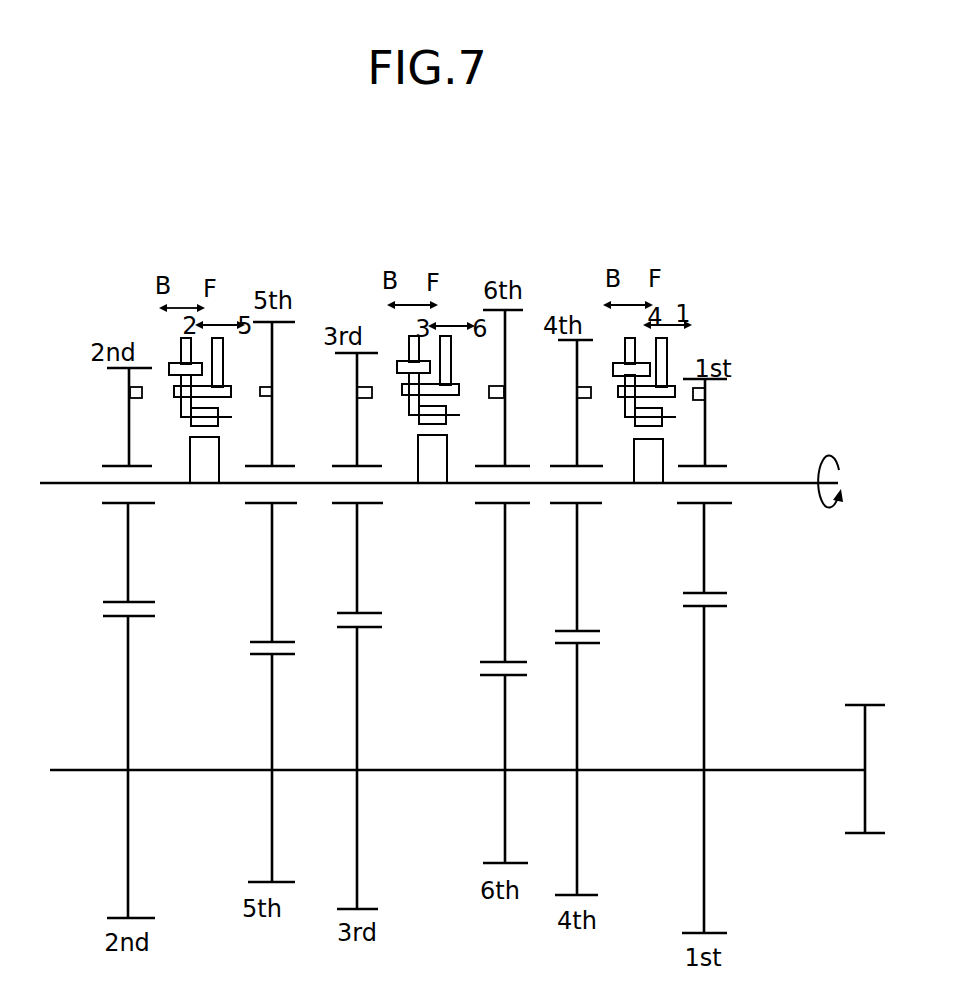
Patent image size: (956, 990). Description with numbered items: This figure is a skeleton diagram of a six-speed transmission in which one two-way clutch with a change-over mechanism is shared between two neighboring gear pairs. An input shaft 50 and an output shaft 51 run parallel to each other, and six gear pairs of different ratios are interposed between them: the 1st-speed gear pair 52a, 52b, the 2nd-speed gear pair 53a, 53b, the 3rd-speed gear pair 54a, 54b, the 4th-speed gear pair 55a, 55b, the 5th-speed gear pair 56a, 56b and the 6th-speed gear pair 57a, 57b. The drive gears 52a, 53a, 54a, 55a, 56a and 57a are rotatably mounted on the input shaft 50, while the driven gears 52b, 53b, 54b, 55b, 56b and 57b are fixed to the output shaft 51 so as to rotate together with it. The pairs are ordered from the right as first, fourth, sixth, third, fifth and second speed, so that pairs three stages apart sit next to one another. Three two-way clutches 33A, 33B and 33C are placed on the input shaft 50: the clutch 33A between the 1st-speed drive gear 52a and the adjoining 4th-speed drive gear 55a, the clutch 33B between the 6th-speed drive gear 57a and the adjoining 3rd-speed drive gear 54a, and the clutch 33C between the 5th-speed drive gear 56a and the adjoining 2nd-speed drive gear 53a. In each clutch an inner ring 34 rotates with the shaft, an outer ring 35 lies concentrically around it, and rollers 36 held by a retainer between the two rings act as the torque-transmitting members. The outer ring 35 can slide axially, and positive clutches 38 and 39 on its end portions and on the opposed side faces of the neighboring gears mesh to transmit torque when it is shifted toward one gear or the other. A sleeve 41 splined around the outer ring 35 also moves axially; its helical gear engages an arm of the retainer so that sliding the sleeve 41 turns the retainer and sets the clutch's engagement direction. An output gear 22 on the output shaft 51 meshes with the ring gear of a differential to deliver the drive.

The two-way clutch 33A is at (682, 251).
The two-way clutch 33B is at (425, 252).
The two-way clutch 33C is at (179, 252).
The sleeve 41 is at (168, 365).
The outer ring 35 is at (173, 390).
The rollers 36 is at (193, 423).
The inner ring 34 is at (202, 468).
The positive clutch 38 is at (270, 390).
The positive clutch 39 is at (132, 400).
The input shaft 50 is at (766, 485).
The output shaft 51 is at (782, 771).
The output gear 22 is at (865, 705).
The 1st-speed drive gear 52a is at (718, 594).
The 1st-speed driven gear 52b is at (705, 660).
The 2nd-speed drive gear 53a is at (578, 617).
The 2nd-speed driven gear 53b is at (578, 720).
The 3rd-speed drive gear 54a is at (503, 635).
The 3rd-speed driven gear 54b is at (503, 712).
The 4th-speed drive gear 55a is at (367, 608).
The 4th-speed driven gear 55b is at (366, 906).
The 5th-speed drive gear 56a is at (260, 637).
The 5th-speed driven gear 56b is at (262, 660).
The 6th-speed drive gear 57a is at (116, 600).
The 6th-speed driven gear 57b is at (118, 618).